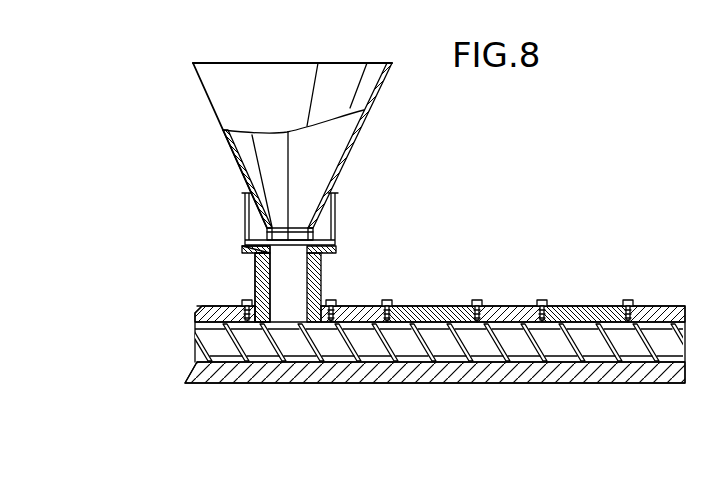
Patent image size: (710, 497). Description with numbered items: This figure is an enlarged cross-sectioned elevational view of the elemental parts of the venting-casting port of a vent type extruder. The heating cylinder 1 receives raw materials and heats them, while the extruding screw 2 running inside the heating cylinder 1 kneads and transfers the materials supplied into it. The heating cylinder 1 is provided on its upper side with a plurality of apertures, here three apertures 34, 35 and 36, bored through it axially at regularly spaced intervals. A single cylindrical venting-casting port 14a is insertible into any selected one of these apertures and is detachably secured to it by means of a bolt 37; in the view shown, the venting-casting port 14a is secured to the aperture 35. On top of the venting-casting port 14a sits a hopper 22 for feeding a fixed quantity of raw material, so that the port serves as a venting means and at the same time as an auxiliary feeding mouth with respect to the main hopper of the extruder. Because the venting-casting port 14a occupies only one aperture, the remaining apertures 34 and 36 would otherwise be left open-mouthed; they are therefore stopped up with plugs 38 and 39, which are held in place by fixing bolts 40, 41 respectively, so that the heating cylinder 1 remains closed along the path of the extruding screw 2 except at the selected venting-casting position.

The heating cylinder 1 is at (676, 298).
The extruding screw 2 is at (213, 353).
The hopper 22 is at (365, 88).
The cylindrical venting-casting port 14a is at (323, 273).
The aperture 34 is at (645, 306).
The aperture 35 is at (503, 305).
The aperture 36 is at (347, 306).
The bolt 37 is at (246, 300).
The plug 38 is at (593, 306).
The plug 39 is at (424, 306).
The fixing bolt 40 is at (543, 300).
The fixing bolt 41 is at (478, 300).